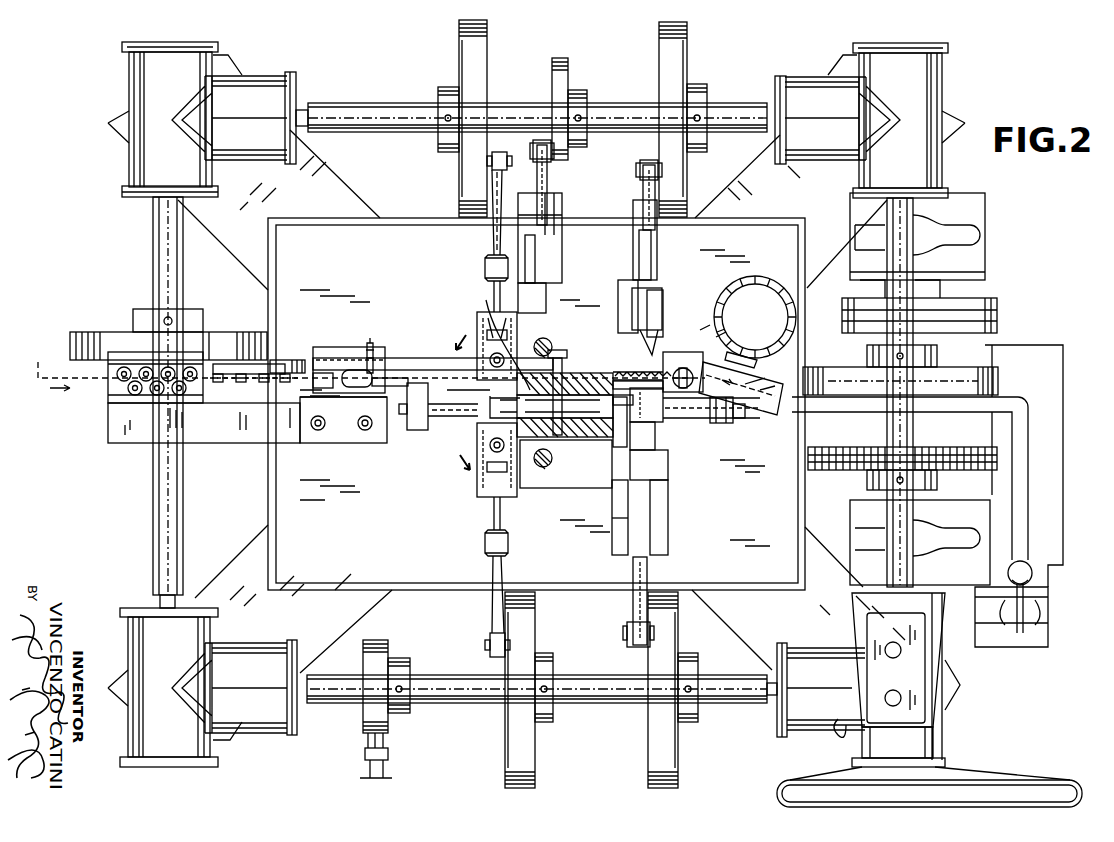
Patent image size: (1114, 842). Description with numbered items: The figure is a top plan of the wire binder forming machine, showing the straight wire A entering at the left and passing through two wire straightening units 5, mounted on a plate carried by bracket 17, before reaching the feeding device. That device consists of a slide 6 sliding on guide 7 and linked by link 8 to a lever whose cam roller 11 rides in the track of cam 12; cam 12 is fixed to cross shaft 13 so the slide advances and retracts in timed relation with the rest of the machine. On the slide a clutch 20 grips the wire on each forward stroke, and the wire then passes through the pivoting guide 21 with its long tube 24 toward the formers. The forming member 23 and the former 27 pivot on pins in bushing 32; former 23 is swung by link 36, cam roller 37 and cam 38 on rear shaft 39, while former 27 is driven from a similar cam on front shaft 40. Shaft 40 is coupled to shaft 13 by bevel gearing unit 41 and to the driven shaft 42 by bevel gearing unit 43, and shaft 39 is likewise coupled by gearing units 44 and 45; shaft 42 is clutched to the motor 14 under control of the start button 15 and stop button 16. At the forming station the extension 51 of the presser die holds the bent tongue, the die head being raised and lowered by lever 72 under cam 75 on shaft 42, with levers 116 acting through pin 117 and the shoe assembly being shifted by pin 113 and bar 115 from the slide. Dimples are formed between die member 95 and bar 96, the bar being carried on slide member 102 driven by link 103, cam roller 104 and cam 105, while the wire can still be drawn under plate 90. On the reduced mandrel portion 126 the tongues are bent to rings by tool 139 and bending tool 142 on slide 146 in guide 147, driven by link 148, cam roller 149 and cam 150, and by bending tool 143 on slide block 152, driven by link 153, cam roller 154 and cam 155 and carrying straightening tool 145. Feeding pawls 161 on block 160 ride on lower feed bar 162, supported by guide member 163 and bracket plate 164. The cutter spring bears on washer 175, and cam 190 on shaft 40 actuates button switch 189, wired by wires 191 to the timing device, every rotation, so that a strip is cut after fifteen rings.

The wire straightening unit 5 is at (157, 396).
The slide 6 is at (296, 360).
The guide 7 is at (352, 392).
The link 8 is at (283, 364).
The cam roller 11 is at (226, 364).
The cam 12 is at (96, 332).
The cross shaft 13 is at (160, 518).
The motor 14 is at (1072, 551).
The start button 15 is at (893, 642).
The stop button 16 is at (893, 690).
The bracket 17 is at (347, 443).
The clutch 20 is at (326, 356).
The guide 21 is at (398, 372).
The forming member 23 is at (478, 322).
The tube 24 is at (433, 358).
The former 27 is at (478, 487).
The bushing 32 is at (566, 464).
The link 36 is at (492, 244).
The cam roller 37 is at (487, 172).
The cam 38 is at (463, 52).
The rear shaft 39 is at (515, 110).
The shaft 40 is at (598, 703).
The bevel gearing unit 41 is at (245, 753).
The driven shaft 42 is at (887, 224).
The bevel gearing unit 43 is at (826, 748).
The gearing unit 44 is at (246, 55).
The gearing unit 45 is at (962, 102).
The extension 51 is at (657, 272).
The lever 72 is at (838, 412).
The cam 75 is at (838, 368).
The plate 90 is at (486, 302).
The die member 95 is at (540, 340).
The bar 96 is at (548, 252).
The slide member 102 is at (555, 273).
The link 103 is at (547, 188).
The cam roller 104 is at (552, 160).
The cam 105 is at (568, 72).
The pin 113 is at (558, 358).
The bar 115 is at (448, 372).
The lever 116 is at (533, 428).
The pin 117 is at (562, 434).
The reduced mandrel portion 126 is at (635, 368).
The tool 139 is at (615, 438).
The bending tool 142 is at (668, 470).
The bending tool 143 is at (650, 360).
The wire straightening tool 145 is at (663, 310).
The slide 146 is at (612, 517).
The guide 147 is at (668, 497).
The link 148 is at (633, 598).
The cam roller 149 is at (627, 632).
The cam 150 is at (678, 628).
The slide block 152 is at (620, 295).
The link 153 is at (643, 188).
The cam roller 154 is at (652, 163).
The cam 155 is at (683, 56).
The block 160 is at (688, 420).
The feeding pawl 161 is at (663, 415).
The lower feed bar 162 is at (742, 418).
The guide member 163 is at (722, 424).
The bracket plate 164 is at (420, 430).
The washer 175 is at (686, 352).
The button switch 189 is at (404, 753).
The cam 190 is at (378, 646).
The wires 191 is at (406, 773).
The wire A is at (366, 367).